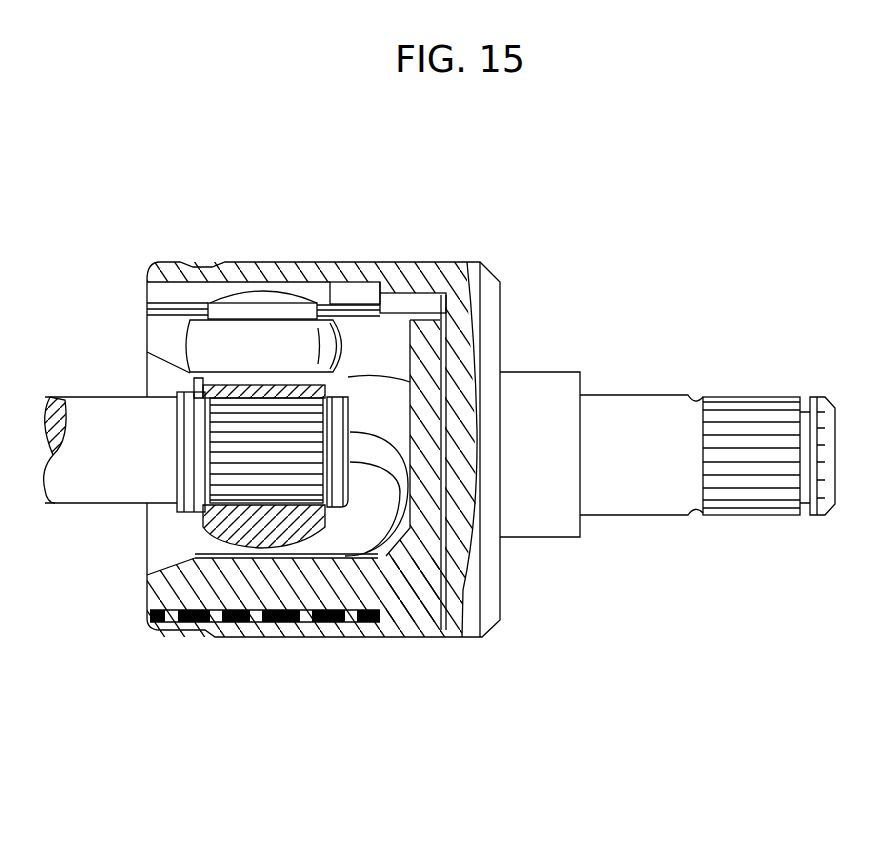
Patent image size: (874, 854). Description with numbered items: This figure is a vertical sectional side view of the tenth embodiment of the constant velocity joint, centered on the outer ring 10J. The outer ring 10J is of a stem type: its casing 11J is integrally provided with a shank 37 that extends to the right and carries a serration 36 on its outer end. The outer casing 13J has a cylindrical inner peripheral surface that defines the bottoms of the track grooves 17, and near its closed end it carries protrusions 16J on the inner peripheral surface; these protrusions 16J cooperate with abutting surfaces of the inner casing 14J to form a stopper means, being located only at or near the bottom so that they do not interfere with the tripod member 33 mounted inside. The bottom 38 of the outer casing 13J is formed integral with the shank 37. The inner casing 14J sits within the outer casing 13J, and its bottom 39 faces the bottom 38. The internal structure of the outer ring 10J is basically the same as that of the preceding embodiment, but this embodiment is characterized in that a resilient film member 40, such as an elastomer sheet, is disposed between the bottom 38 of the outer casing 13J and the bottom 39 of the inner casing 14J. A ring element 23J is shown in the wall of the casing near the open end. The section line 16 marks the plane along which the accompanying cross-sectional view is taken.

The outer ring 10J is at (514, 266).
The casing 11J is at (443, 262).
The outer casing 13J is at (247, 275).
The inner casing 14J is at (307, 587).
The section line F—F 16 is at (132, 195).
The protrusions 16J is at (388, 288).
The track grooves 17 is at (198, 292).
The seal ring 23J is at (208, 608).
The tripod member 33 is at (182, 341).
The serration 36 is at (752, 408).
The shank 37 is at (612, 422).
The bottom of the outer casing 38 is at (455, 603).
The bottom of the inner casing 39 is at (390, 590).
The resilient film member 40 is at (446, 338).